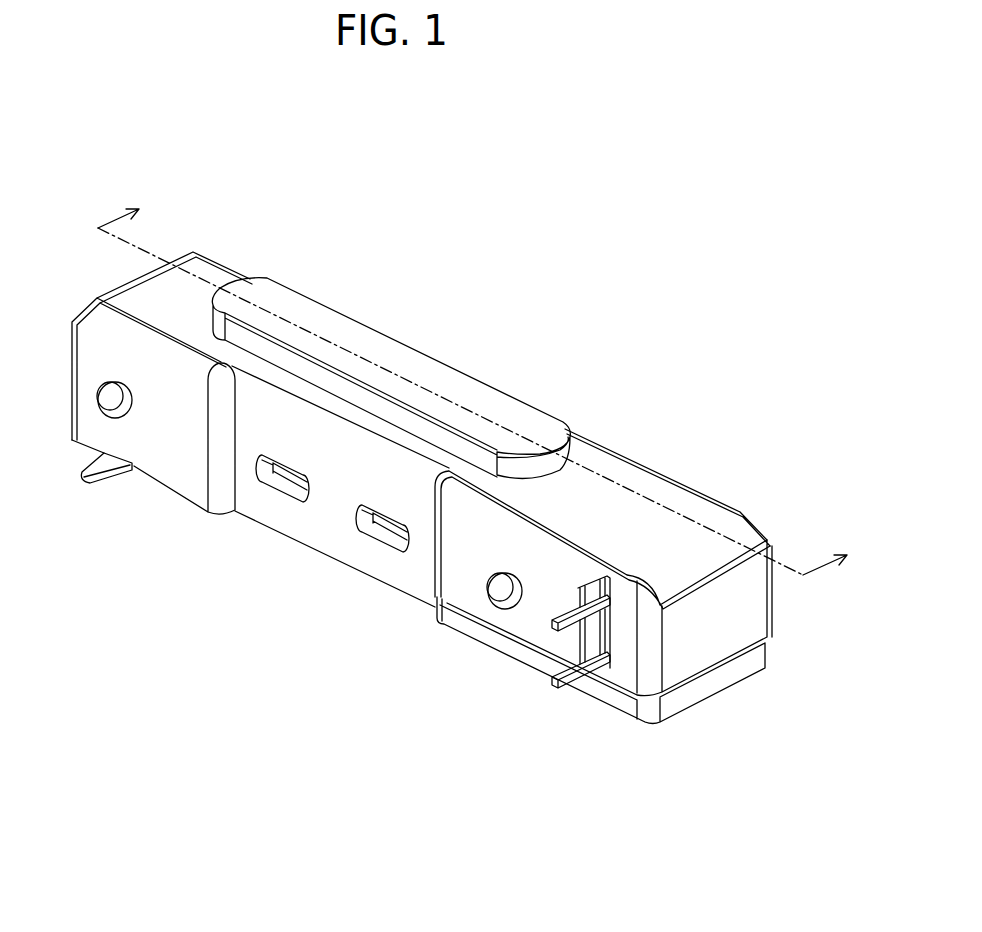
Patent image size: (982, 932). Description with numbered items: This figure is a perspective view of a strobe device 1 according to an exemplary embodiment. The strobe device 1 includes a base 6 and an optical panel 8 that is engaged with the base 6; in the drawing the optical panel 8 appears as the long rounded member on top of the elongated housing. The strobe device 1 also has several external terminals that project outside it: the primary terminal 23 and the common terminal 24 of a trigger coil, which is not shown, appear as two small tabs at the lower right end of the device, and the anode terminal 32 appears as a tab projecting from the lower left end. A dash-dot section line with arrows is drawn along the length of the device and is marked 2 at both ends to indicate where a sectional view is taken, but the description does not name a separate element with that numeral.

The strobe device 1 is at (662, 192).
The section line 2- 2 is at (484, 385).
The base 6 is at (432, 676).
The optical panel 8 is at (485, 395).
The primary terminal 23 is at (557, 623).
The common terminal 24 is at (562, 686).
The anode terminal 32 is at (93, 470).